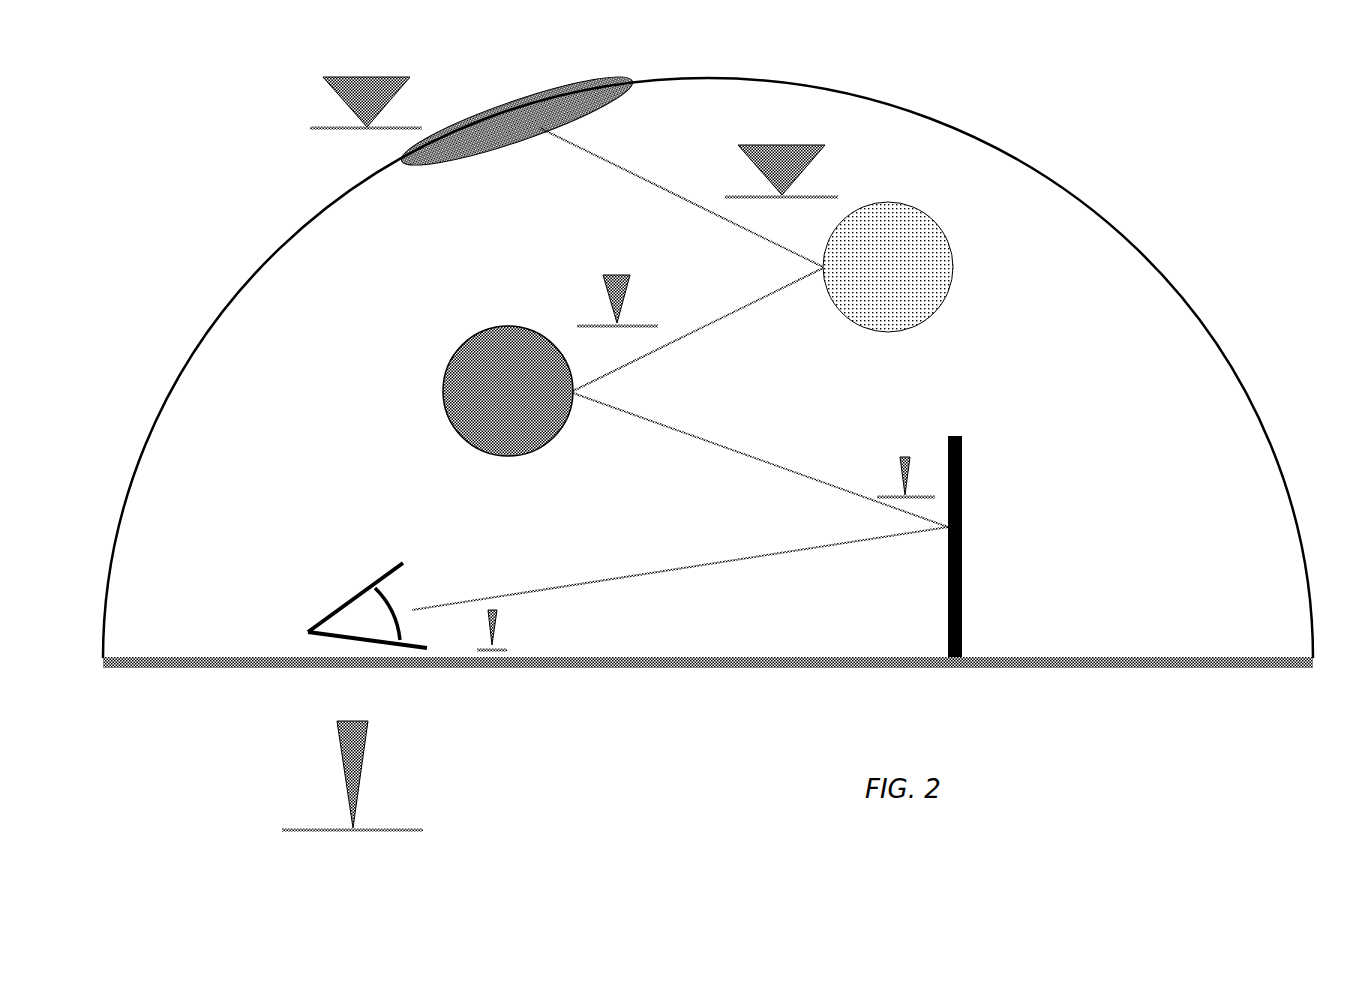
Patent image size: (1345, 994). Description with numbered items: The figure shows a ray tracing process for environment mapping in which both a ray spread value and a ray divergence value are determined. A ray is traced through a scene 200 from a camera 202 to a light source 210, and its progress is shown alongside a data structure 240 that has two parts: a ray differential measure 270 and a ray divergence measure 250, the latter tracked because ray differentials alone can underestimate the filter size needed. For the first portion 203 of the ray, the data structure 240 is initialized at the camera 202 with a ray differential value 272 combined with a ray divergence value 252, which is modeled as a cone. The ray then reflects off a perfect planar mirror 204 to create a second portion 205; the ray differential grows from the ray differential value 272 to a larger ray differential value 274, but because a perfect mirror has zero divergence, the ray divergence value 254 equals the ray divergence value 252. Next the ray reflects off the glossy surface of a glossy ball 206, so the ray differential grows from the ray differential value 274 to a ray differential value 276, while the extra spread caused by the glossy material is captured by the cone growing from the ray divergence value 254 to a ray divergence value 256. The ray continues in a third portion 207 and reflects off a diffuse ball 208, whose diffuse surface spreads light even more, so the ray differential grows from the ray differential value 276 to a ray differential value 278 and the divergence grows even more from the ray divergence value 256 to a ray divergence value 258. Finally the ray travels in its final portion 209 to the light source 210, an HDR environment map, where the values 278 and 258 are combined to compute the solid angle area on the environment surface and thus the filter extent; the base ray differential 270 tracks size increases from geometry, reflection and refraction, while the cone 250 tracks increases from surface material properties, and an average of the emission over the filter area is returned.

The scene 200 is at (199, 166).
The camera 202 is at (317, 619).
The first portion of the ray 203 is at (716, 567).
The perfect planar mirror 204 is at (963, 598).
The second portion of the ray 205 is at (698, 440).
The glossy ball 206 is at (461, 391).
The third portion of the ray 207 is at (706, 326).
The diffuse ball 208 is at (937, 264).
The final portion of the ray 209 is at (638, 173).
The light source 210 is at (527, 99).
The data structure 240 is at (328, 775).
The ray divergence measure 250 is at (367, 748).
The ray divergence value 252 is at (493, 609).
The ray divergence value 254 is at (905, 455).
The ray divergence value 256 is at (637, 281).
The ray divergence value 258 is at (387, 78).
The ray differential measure 270 is at (406, 828).
The ray differential value 272 is at (479, 652).
The ray differential value 274 is at (885, 496).
The ray differential value 276 is at (608, 328).
The ray differential value 278 is at (314, 130).